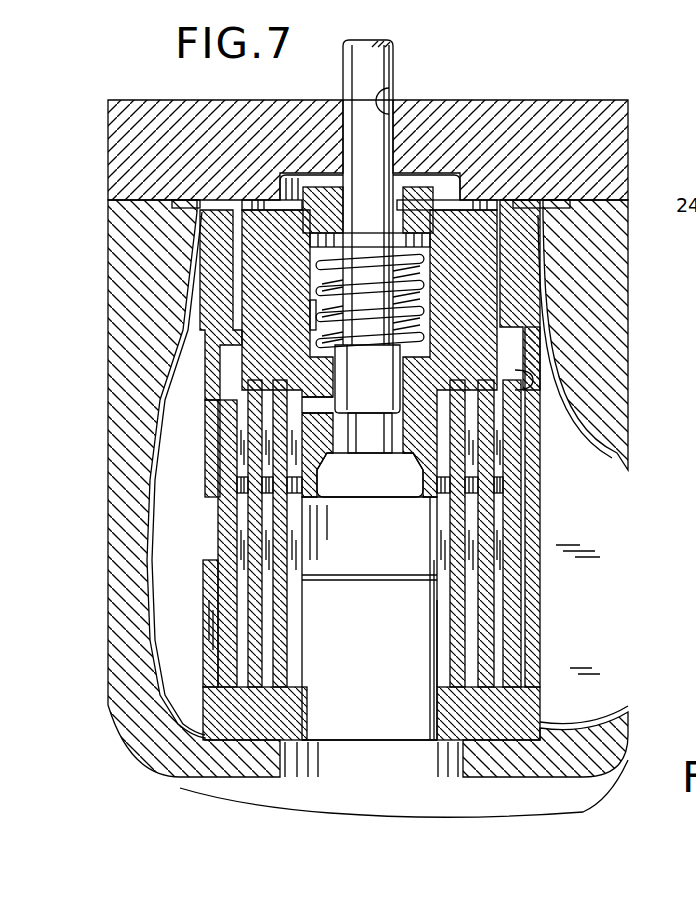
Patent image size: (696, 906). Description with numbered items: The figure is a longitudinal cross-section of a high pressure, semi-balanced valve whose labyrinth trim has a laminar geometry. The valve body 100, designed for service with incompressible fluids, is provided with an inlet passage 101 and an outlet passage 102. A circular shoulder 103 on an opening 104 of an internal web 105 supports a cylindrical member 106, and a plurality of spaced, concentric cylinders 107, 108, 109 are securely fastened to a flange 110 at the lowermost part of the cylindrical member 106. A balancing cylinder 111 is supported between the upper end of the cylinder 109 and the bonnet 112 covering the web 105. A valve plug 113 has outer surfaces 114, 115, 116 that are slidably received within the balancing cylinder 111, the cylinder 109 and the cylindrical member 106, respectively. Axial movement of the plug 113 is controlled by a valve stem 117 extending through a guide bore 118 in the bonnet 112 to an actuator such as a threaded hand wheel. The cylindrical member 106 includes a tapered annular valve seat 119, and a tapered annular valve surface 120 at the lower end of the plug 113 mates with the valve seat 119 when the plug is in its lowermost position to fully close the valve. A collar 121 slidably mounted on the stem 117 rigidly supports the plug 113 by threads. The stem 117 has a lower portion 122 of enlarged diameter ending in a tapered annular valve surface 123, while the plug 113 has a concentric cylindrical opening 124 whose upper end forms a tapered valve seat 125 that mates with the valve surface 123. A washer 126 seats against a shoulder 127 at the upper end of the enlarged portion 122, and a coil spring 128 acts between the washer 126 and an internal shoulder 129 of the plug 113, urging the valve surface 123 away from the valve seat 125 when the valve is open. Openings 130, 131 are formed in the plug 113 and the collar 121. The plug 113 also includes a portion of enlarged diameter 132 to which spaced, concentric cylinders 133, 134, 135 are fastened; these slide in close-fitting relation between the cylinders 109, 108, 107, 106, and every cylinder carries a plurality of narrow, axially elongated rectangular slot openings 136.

The valve body 100 is at (640, 308).
The inlet passage 101 is at (613, 450).
The outlet passage 102 is at (250, 777).
The circular shoulder 103 is at (302, 724).
The opening 104 is at (453, 757).
The internal web 105 is at (218, 455).
The cylindrical member 106 is at (443, 638).
The cylinder 107 is at (473, 663).
The cylinder 108 is at (498, 610).
The cylinder 109 is at (530, 637).
The flange 110 is at (530, 713).
The balancing cylinder 111 is at (197, 317).
The bonnet 112 is at (615, 141).
The valve plug 113 is at (430, 500).
The outer surface 114 is at (230, 207).
The outer surface 115 is at (218, 362).
The outer surface 116 is at (307, 500).
The valve stem 117 is at (380, 63).
The guide bore 118 is at (392, 92).
The tapered annular valve seat 119 is at (376, 580).
The tapered annular valve surface 120 is at (433, 505).
The collar 121 is at (430, 187).
The lower portion 122 is at (403, 287).
The tapered annular valve surface 123 is at (370, 475).
The cylindrical opening 124 is at (382, 443).
The tapered valve seat 125 is at (352, 463).
The washer 126 is at (327, 257).
The shoulder 127 is at (405, 240).
The coil spring 128 is at (320, 318).
The internal shoulder 129 is at (420, 353).
The opening 130 is at (317, 410).
The opening 131 is at (330, 187).
The portion of enlarged diameter 132 is at (503, 357).
The cylinder 133 is at (223, 613).
The cylinder 134 is at (209, 652).
The cylinder 135 is at (290, 615).
The rectangular slot openings 136 is at (210, 497).